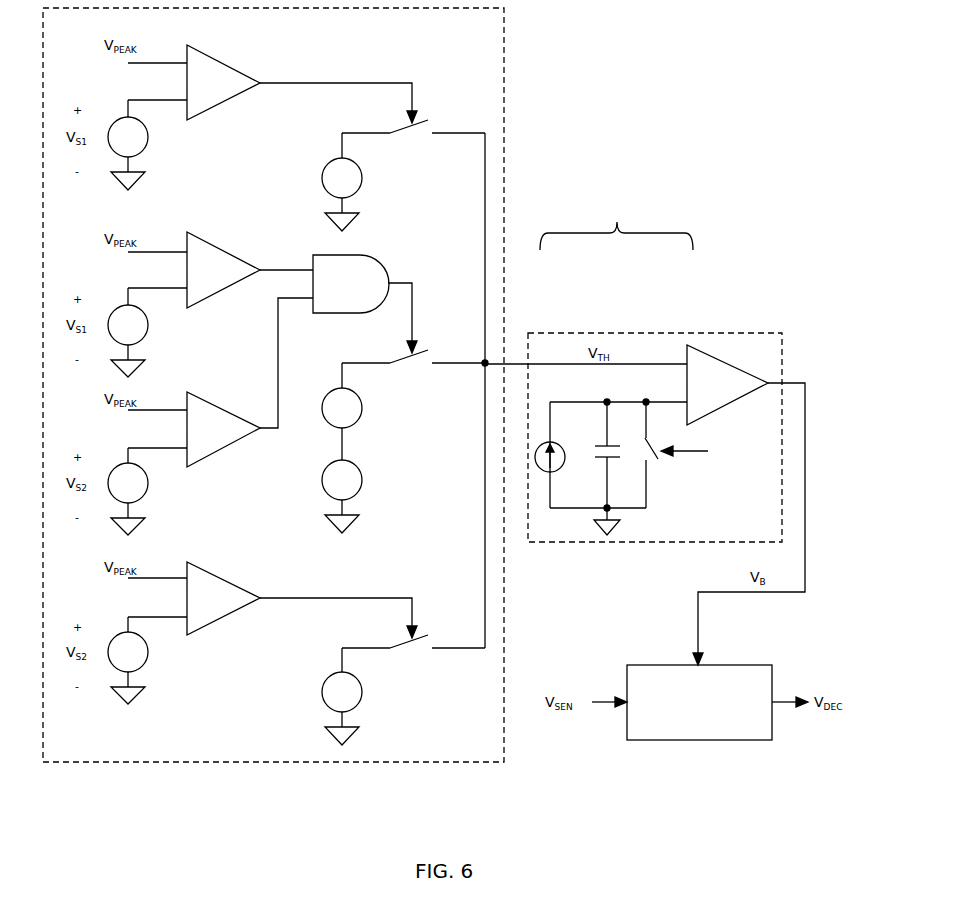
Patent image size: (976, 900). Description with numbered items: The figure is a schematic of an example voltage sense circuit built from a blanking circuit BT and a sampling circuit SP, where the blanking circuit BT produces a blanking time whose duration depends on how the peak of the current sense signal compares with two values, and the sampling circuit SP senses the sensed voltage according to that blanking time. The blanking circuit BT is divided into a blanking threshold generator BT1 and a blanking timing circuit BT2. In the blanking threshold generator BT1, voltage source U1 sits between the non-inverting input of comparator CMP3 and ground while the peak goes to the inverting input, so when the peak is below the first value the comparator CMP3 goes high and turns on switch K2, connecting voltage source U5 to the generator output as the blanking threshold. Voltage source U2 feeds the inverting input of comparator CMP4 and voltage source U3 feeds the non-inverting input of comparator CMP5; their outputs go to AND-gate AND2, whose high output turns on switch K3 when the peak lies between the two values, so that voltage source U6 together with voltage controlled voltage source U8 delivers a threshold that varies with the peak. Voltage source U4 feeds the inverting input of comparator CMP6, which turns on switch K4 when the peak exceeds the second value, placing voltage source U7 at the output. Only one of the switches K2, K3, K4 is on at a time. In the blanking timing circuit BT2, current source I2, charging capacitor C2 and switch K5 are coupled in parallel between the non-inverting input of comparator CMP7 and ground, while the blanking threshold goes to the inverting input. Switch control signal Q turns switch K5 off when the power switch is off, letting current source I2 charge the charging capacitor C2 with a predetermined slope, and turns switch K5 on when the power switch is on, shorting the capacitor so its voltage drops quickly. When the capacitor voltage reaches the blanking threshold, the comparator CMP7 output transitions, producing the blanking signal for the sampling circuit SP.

The comparator CMP3 is at (194, 82).
The comparator CMP4 is at (194, 270).
The comparator CMP5 is at (194, 429).
The comparator CMP6 is at (194, 598).
The comparator CMP7 is at (659, 385).
The voltage source U1 is at (144, 145).
The voltage source U2 is at (144, 332).
The voltage source U3 is at (144, 491).
The voltage source U4 is at (144, 660).
The voltage source U5 is at (323, 182).
The voltage source U6 is at (323, 480).
The voltage source U7 is at (323, 696).
The voltage controlled voltage source U8 is at (357, 395).
The AND-gate AND2 is at (324, 341).
The switch K2 is at (372, 123).
The switch K3 is at (413, 338).
The switch K4 is at (372, 638).
The switch K5 is at (656, 453).
The current source I2 is at (590, 455).
The charging capacitor C2 is at (612, 467).
The switch control signal Q is at (694, 453).
The blanking circuit BT is at (616, 221).
The blanking threshold generator BT1 is at (503, 303).
The blanking timing circuit BT2 is at (652, 336).
The sampling circuit SP is at (700, 561).